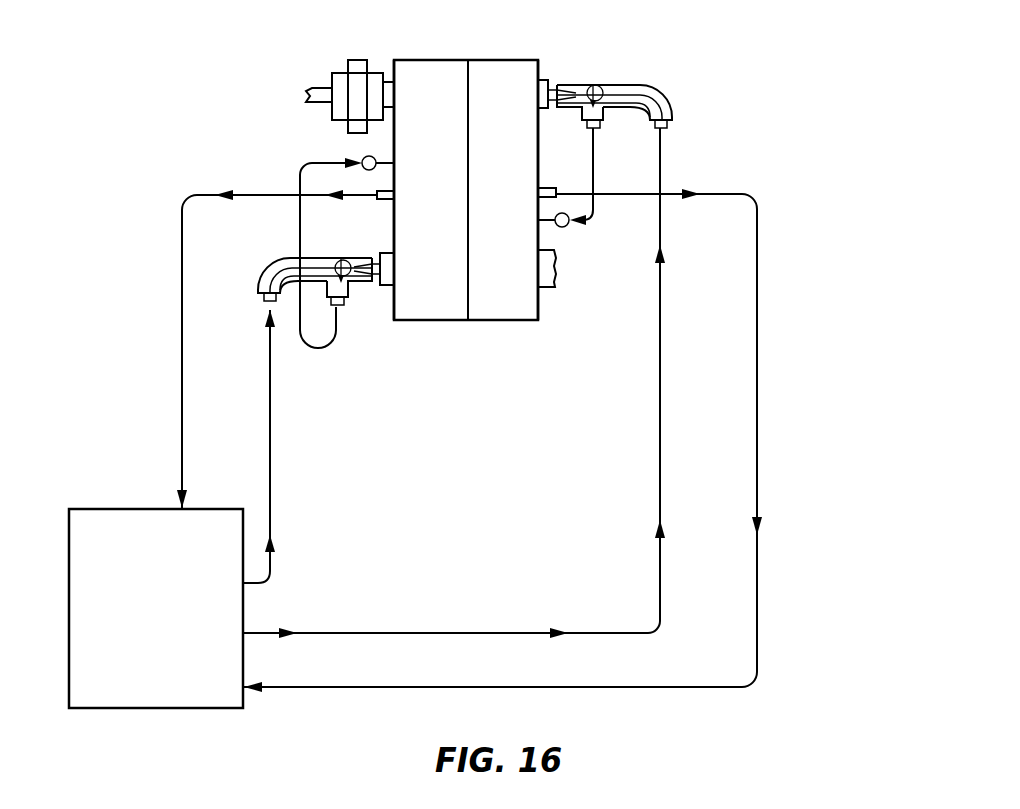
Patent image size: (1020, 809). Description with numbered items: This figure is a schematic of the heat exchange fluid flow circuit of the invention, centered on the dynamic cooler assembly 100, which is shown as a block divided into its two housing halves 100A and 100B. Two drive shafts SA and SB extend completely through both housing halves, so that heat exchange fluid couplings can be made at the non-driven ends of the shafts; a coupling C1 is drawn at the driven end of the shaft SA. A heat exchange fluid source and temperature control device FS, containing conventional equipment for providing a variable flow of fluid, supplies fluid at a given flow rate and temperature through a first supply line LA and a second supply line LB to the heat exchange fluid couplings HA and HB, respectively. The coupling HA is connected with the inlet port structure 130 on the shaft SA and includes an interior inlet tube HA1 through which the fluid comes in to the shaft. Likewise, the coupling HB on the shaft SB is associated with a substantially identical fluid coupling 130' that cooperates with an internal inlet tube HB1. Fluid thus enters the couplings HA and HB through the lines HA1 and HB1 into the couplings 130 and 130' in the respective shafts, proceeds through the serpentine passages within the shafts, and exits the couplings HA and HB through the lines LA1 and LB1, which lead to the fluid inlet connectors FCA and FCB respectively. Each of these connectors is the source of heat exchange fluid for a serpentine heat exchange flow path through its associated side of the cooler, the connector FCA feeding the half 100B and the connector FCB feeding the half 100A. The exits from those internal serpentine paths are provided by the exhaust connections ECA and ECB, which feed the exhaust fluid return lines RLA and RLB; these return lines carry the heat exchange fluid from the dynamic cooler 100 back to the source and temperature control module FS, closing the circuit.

The dynamic cooler assembly 100 is at (478, 34).
The housing half 100A is at (452, 150).
The housing half 100B is at (528, 146).
The coupling C1 is at (358, 78).
The drive shaft SA is at (391, 86).
The heat exchange fluid coupling HA is at (663, 88).
The interior inlet tube HA1 is at (630, 84).
The inlet port structure 130 is at (583, 61).
The fluid coupling 130' is at (362, 228).
The exhaust connection ECA is at (541, 186).
The exhaust fluid return line RLA is at (758, 390).
The line LA1 is at (597, 169).
The fluid inlet connector FCA is at (566, 228).
The drive shaft SB is at (555, 290).
The first supply line LA is at (662, 323).
The fluid inlet connector FCB is at (362, 157).
The line LB1 is at (298, 232).
The exhaust connection ECB is at (386, 200).
The exhaust fluid return line RLB is at (185, 358).
The heat exchange fluid coupling HB is at (316, 272).
The internal inlet tube HB1 is at (270, 268).
The second supply line LB is at (272, 485).
The heat exchange fluid source and temperature control device FS is at (145, 505).